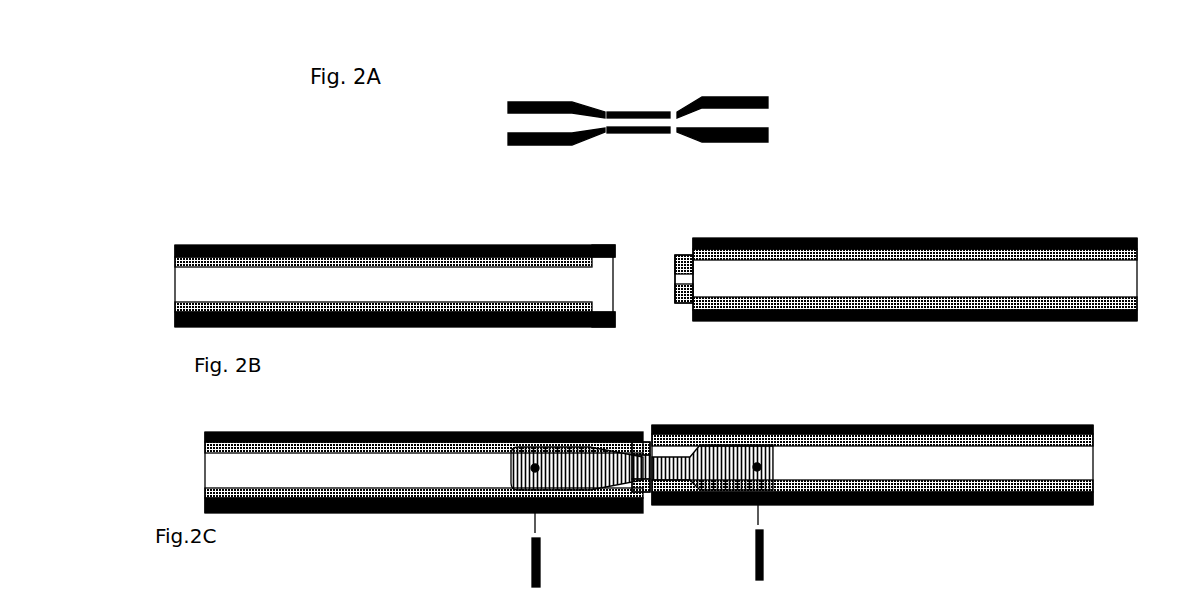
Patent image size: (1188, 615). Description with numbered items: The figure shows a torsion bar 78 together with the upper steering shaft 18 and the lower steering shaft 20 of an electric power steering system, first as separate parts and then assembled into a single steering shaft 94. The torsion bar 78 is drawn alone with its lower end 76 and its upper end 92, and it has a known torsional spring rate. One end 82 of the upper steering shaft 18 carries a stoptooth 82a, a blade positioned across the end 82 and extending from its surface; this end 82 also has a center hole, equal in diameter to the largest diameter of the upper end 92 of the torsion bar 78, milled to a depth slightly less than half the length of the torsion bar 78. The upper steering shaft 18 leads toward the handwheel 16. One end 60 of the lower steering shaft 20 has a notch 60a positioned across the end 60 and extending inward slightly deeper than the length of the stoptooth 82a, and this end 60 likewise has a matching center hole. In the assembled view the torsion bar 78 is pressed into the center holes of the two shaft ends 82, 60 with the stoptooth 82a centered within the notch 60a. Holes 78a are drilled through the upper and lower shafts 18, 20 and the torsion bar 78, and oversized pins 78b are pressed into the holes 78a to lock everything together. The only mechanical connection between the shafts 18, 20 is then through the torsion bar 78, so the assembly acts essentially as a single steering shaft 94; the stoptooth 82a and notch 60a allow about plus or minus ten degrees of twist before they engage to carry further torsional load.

In FIG. 2A, the lower end 76 is at (540, 102).
In FIG. 2A, the upper end 92 is at (740, 97).
In FIG. 2A, the torsion bar 78 is at (806, 83).
In FIG. 2C, the torsion bar 78 is at (532, 432).
In FIG. 2B, the lower steering shaft 20 is at (267, 245).
In FIG. 2C, the lower steering shaft 20 is at (328, 477).
In FIG. 2B, the end of the lower steering shaft 60 is at (570, 240).
In FIG. 2B, the notch 60a is at (613, 293).
In FIG. 2B, the upper steering shaft 18 is at (915, 244).
In FIG. 2C, the upper steering shaft 18 is at (1052, 468).
In FIG. 2B, the end of the upper steering shaft 82 is at (753, 235).
In FIG. 2B, the stoptooth 82a is at (676, 312).
In FIG. 2B, the handwheel 16 is at (1140, 362).
In FIG. 2C, the holes 78a is at (425, 428).
In FIG. 2C, the oversized pins 78b is at (532, 571).
In FIG. 2C, the single steering shaft 94 is at (910, 580).